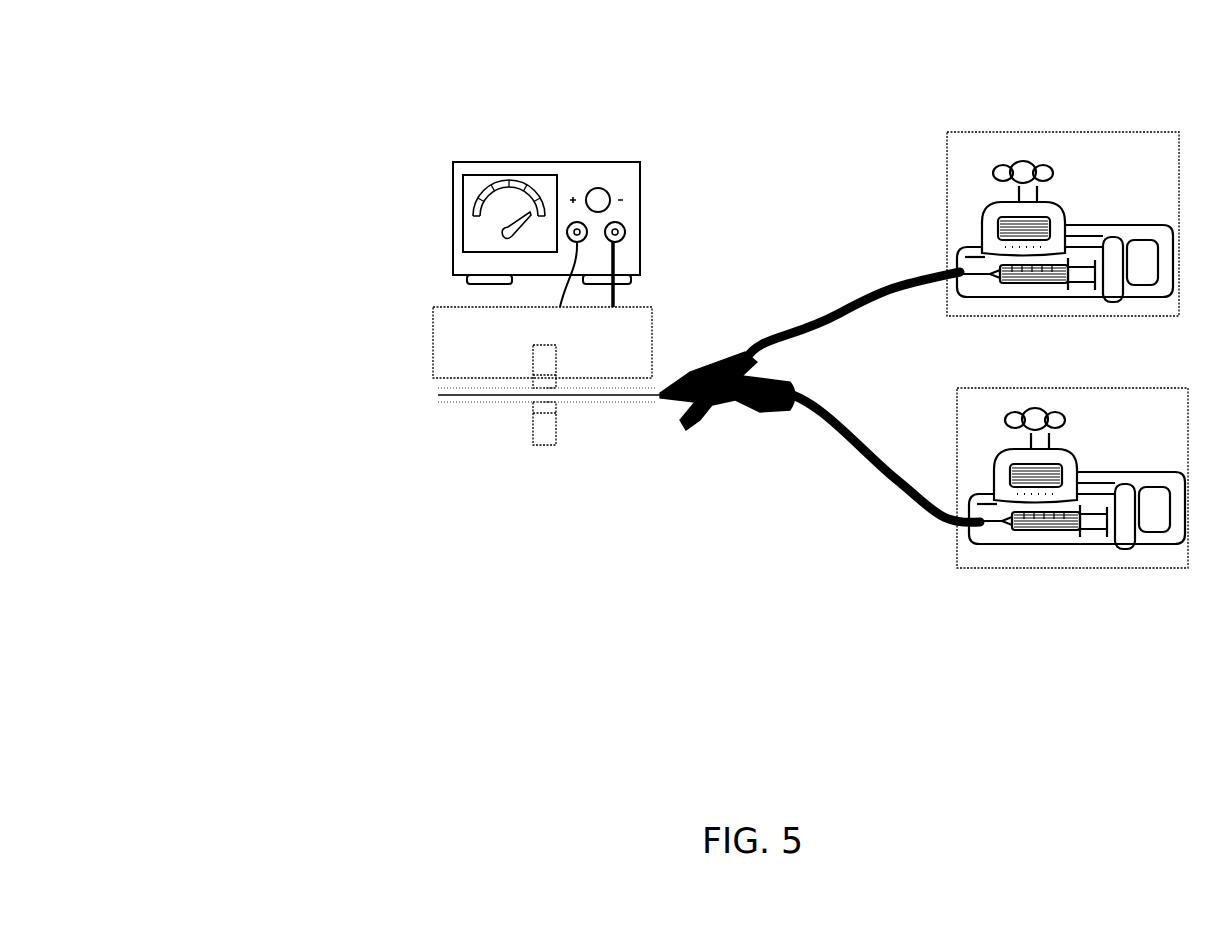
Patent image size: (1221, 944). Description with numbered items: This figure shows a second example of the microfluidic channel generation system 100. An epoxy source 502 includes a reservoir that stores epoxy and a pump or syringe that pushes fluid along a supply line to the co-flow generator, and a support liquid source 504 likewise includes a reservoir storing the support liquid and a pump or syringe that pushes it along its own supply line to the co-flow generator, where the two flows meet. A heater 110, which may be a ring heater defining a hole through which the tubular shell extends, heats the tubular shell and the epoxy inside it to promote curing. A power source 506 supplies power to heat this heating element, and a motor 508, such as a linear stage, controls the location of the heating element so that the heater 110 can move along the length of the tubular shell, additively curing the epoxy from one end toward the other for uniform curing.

The system 100 is at (220, 157).
The heater 110 is at (540, 446).
The epoxy source 502 is at (1168, 169).
The support liquid source 504 is at (1178, 426).
The power source 506 is at (640, 171).
The motor 508 is at (433, 333).